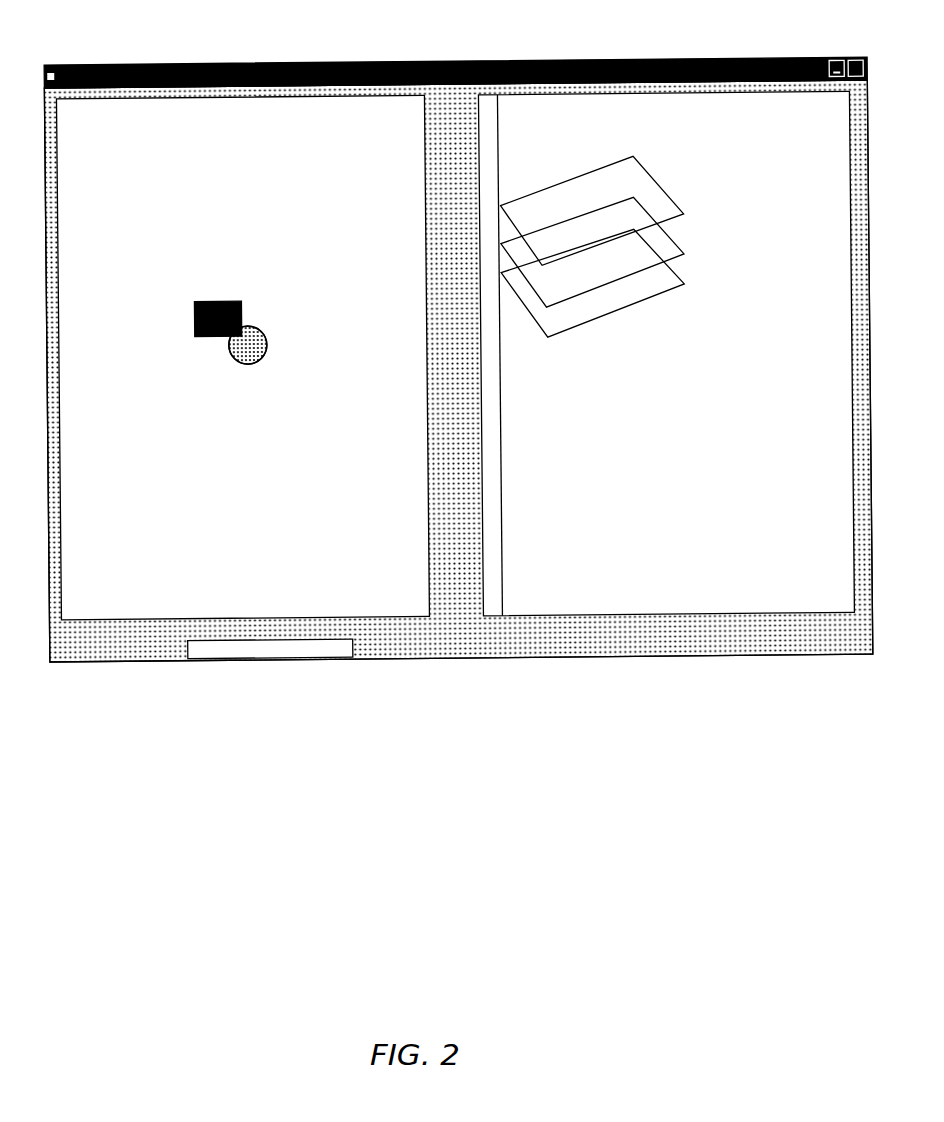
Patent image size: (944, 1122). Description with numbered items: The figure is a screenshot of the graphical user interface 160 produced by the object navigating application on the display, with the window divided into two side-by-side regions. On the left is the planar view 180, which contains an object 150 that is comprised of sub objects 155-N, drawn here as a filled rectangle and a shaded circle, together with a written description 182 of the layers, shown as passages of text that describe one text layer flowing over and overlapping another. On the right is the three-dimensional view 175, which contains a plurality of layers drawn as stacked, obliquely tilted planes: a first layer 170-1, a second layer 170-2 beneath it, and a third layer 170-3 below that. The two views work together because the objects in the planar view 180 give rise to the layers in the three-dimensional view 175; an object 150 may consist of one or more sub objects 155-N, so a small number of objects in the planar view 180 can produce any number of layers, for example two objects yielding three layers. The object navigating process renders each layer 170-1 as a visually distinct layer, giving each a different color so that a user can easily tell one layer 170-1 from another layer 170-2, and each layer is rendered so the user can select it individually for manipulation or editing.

The graphical user interface 160 is at (458, 390).
The planar view 180 is at (243, 317).
The three-dimensional view 175 is at (666, 353).
The written description of the layers 182 is at (165, 225).
The sub objects 155-N is at (223, 328).
The object 150 is at (224, 382).
The layer 170-1 is at (710, 148).
The layer 170-2 is at (695, 243).
The layer 170-3 is at (675, 310).